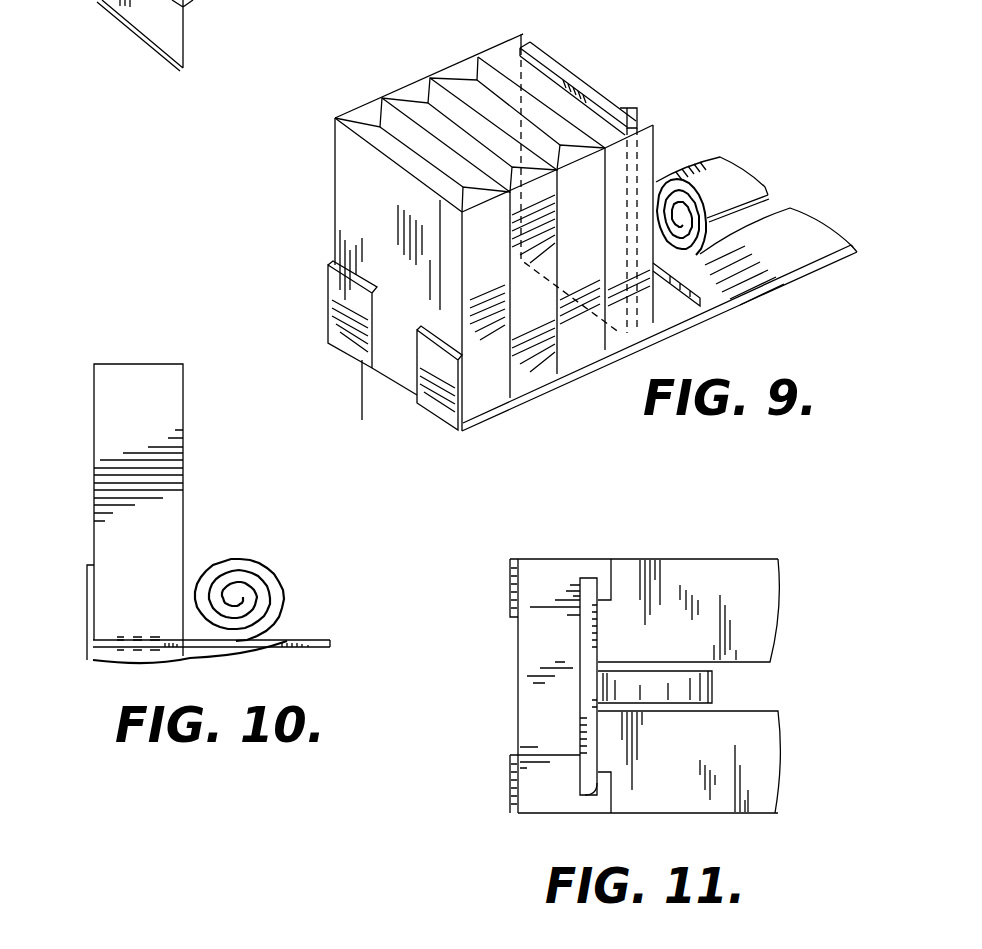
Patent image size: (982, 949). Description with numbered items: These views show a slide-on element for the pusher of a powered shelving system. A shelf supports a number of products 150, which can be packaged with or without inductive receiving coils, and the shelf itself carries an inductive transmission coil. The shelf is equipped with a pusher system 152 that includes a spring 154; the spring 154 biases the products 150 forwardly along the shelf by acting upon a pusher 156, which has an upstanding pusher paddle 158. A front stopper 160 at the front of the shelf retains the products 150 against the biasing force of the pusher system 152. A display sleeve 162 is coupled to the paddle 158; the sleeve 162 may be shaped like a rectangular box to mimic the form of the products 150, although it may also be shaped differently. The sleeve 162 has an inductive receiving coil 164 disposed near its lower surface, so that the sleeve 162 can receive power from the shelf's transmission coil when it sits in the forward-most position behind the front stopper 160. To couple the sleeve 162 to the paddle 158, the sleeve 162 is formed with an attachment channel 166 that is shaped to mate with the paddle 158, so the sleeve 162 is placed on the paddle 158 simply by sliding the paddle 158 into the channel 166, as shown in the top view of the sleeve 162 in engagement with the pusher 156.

In FIG. 9, the products 150 is at (455, 67).
In FIG. 9, the pusher system 152 is at (667, 167).
In FIG. 10, the pusher system 152 is at (260, 552).
In FIG. 9, the spring 154 is at (760, 210).
In FIG. 10, the spring 154 is at (282, 586).
In FIG. 11, the spring 154 is at (713, 690).
In FIG. 9, the pusher 156 is at (688, 290).
In FIG. 11, the pusher 156 is at (604, 610).
In FIG. 9, the pusher paddle 158 is at (558, 62).
In FIG. 11, the pusher paddle 158 is at (590, 578).
In FIG. 9, the front stopper 160 is at (445, 413).
In FIG. 10, the front stopper 160 is at (87, 575).
In FIG. 11, the front stopper 160 is at (510, 590).
In FIG. 9, the display sleeve 162 is at (503, 47).
In FIG. 10, the display sleeve 162 is at (145, 364).
In FIG. 11, the display sleeve 162 is at (537, 559).
In FIG. 10, the inductive receiving coil 164 is at (82, 646).
In FIG. 9, the attachment channel 166 is at (612, 105).
In FIG. 11, the attachment channel 166 is at (588, 796).